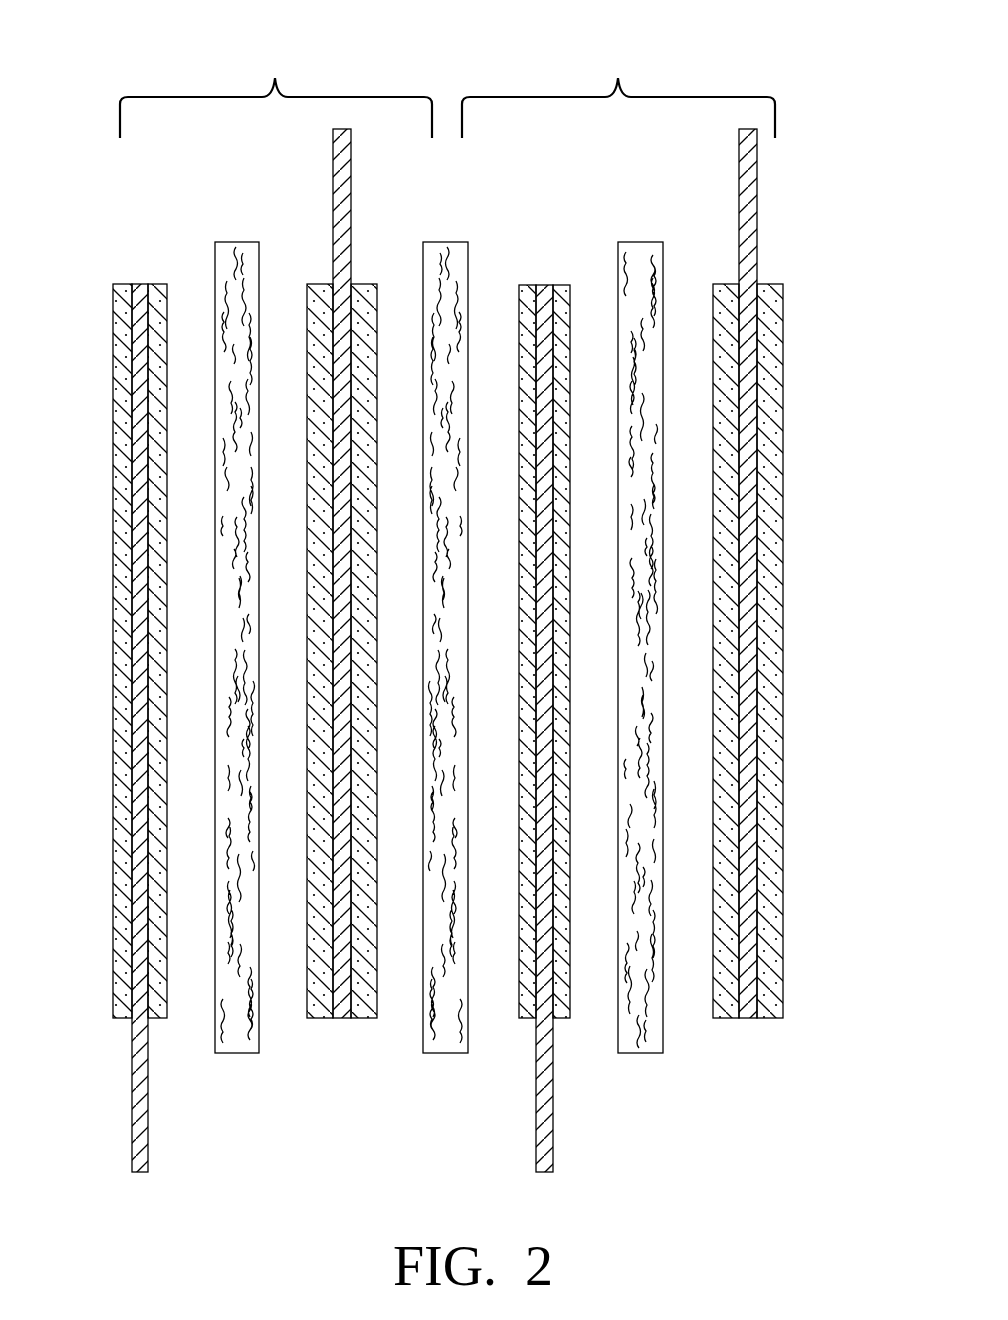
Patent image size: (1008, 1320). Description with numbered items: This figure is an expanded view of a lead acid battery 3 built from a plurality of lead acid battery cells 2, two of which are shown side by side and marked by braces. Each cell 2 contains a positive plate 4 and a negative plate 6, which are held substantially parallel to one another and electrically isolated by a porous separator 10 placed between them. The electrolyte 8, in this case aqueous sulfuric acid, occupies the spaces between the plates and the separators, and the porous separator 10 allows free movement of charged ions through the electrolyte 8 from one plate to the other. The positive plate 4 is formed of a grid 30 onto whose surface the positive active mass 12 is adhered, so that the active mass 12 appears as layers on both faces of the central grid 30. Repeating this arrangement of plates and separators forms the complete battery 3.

The lead acid battery cell 2 is at (447, 88).
The lead acid battery 3 is at (843, 710).
The positive plate 4 is at (149, 1139).
The negative plate 6 is at (337, 1024).
The electrolyte 8 is at (173, 680).
The porous separator 10 is at (238, 1053).
The positive active mass 12 is at (113, 323).
The grid 30 is at (137, 493).